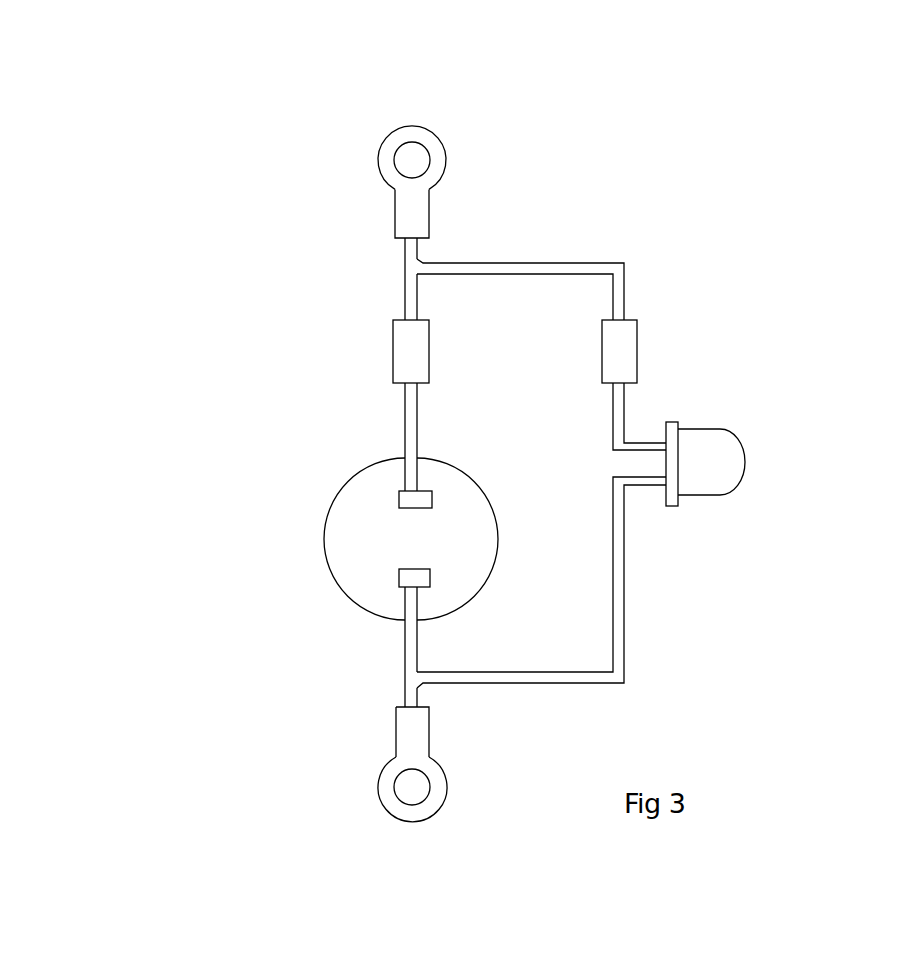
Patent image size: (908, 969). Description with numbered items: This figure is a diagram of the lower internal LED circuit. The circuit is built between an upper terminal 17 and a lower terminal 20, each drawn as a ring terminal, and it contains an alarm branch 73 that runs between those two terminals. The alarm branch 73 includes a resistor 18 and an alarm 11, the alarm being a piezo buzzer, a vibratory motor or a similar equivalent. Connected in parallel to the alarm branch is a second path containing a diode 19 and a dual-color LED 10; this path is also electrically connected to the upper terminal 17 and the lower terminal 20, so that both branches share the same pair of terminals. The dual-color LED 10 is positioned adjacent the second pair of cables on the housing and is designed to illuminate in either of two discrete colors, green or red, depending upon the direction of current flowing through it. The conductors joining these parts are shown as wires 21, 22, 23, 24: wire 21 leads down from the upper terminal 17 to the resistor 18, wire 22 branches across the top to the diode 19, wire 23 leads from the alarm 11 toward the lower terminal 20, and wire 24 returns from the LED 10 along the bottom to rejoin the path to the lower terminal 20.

The dual-color LED 10 is at (745, 463).
The alarm 11 is at (336, 562).
The upper terminal 17 is at (443, 142).
The resistor 18 is at (393, 353).
The diode 19 is at (637, 350).
The lower terminal 20 is at (389, 813).
The first wire 21 is at (405, 280).
The second wire 22 is at (557, 262).
The third wire 23 is at (406, 649).
The fourth wire 24 is at (625, 642).
The alarm branch 73 is at (405, 428).